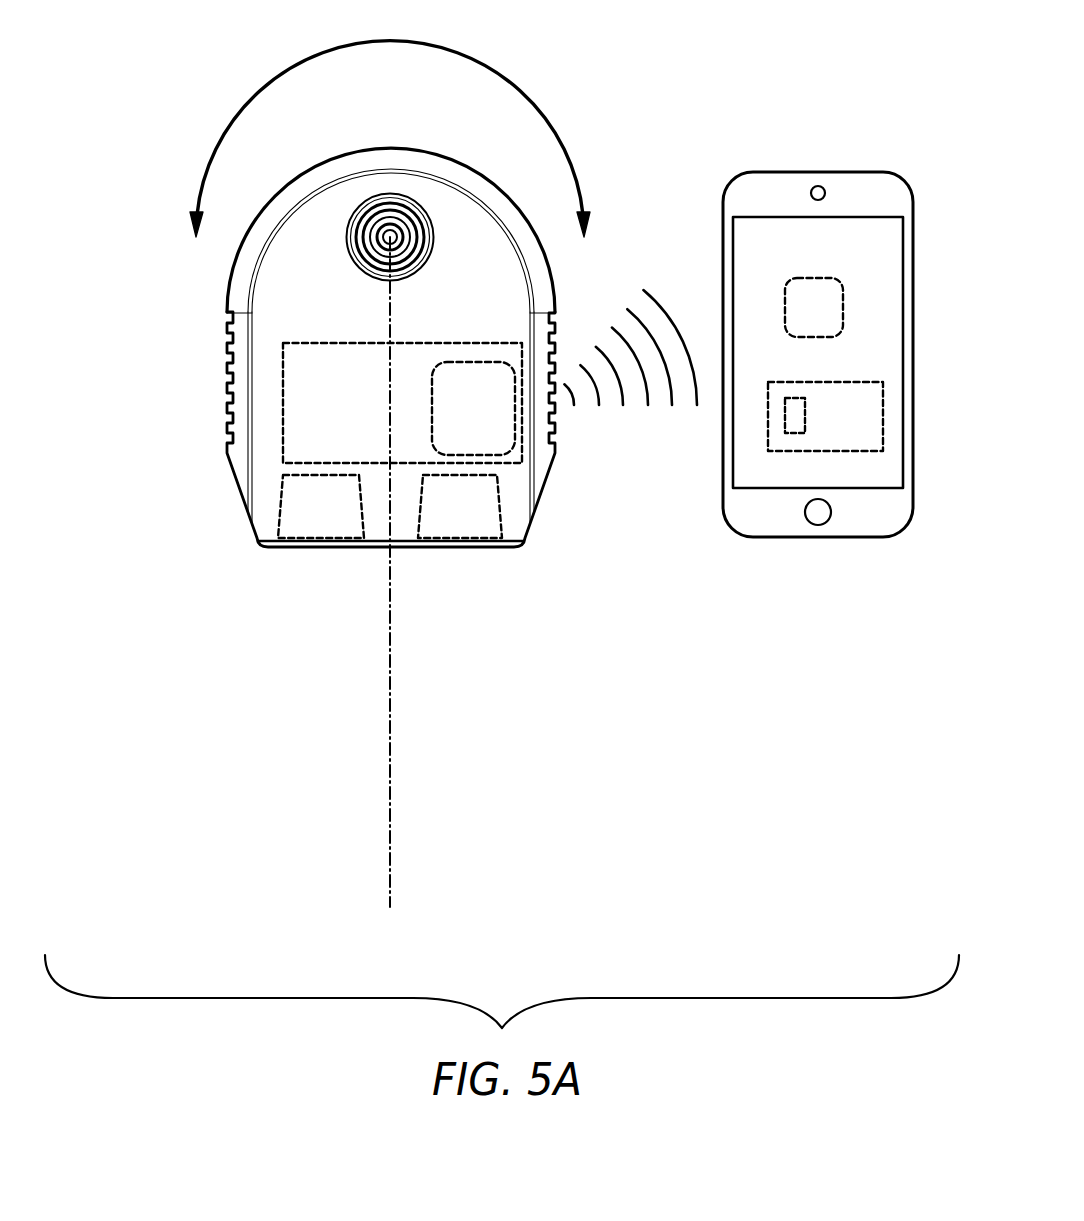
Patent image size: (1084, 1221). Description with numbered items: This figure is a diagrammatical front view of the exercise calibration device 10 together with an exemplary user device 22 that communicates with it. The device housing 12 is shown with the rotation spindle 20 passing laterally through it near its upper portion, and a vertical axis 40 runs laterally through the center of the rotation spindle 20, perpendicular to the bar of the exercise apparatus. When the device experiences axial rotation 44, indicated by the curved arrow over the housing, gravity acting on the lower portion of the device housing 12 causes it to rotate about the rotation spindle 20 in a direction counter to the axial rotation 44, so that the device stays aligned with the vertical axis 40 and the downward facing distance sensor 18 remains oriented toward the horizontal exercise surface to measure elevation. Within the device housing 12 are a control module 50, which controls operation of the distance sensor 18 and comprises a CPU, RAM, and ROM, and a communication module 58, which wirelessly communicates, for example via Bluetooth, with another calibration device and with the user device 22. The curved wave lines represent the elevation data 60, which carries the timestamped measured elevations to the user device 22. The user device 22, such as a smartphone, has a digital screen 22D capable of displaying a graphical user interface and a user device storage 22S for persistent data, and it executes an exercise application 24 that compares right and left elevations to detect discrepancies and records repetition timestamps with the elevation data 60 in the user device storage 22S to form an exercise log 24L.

The exercise calibration device 10 is at (150, 294).
The device housing 12 is at (286, 185).
The distance sensor 18 is at (282, 505).
The rotation spindle 20 is at (407, 197).
The user device 22 is at (824, 538).
The digital screen 22D is at (868, 475).
The user device storage 22S is at (868, 397).
The exercise application 24 is at (784, 300).
The exercise log 24L is at (805, 417).
The vertical axis 40 is at (392, 747).
The axial rotation 44 is at (553, 128).
The control module 50 is at (339, 465).
The communication module 58 is at (475, 456).
The elevation data 60 is at (648, 380).